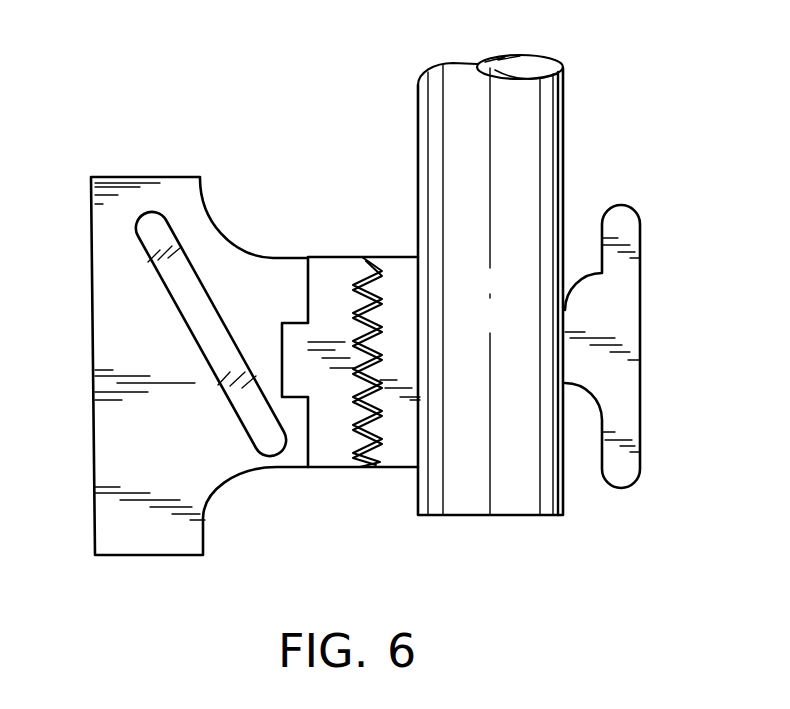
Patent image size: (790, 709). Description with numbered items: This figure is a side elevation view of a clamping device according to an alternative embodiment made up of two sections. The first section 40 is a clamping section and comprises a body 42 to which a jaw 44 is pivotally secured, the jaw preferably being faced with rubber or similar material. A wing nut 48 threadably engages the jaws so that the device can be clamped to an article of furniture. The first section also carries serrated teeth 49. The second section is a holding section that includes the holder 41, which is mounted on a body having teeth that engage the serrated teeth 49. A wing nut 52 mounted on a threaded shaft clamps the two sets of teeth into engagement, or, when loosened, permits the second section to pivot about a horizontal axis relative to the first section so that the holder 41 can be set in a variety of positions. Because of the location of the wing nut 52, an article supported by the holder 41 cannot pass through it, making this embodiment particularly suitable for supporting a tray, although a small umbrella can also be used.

The first section 40 is at (242, 222).
The holder 41 is at (566, 105).
The body 42 is at (323, 453).
The jaw 44 is at (133, 543).
The wing nut 48 is at (172, 303).
The serrated teeth 49 is at (356, 277).
The wing nut 52 is at (633, 322).